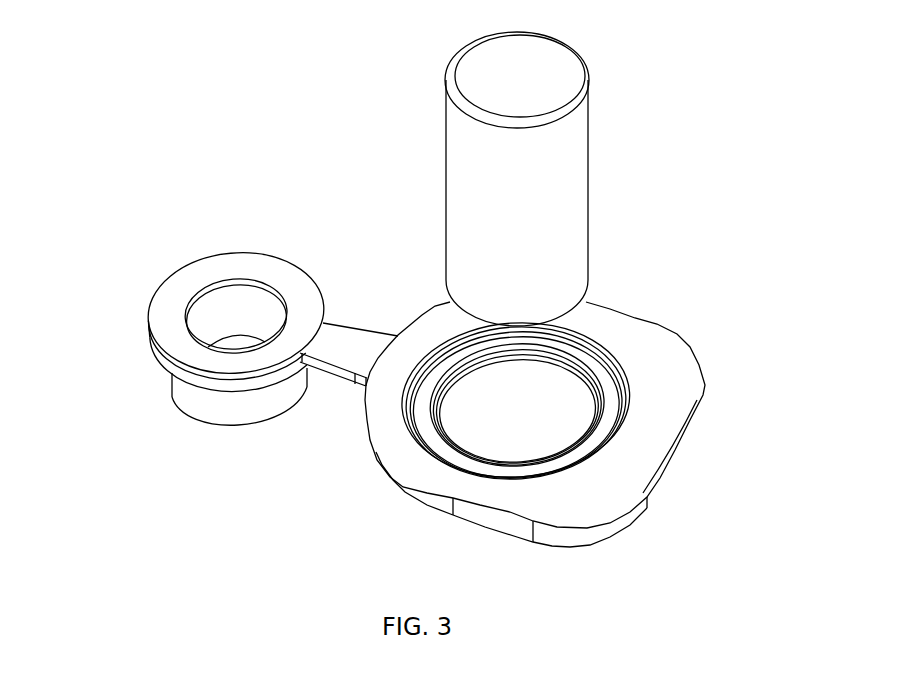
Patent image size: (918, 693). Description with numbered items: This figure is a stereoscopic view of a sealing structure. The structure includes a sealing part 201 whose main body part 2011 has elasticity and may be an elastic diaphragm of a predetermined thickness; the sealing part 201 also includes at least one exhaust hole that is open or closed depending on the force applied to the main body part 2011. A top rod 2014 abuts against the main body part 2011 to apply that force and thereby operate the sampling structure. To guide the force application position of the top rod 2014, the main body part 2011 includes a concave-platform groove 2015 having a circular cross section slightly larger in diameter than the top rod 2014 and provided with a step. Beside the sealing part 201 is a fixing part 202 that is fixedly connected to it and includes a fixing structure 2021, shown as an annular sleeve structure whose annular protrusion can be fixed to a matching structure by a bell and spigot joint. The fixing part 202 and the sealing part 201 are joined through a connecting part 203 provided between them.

The sealing part 201 is at (688, 378).
The main body part 2011 is at (547, 422).
The top rod 2014 is at (572, 165).
The concave-platform groove 2015 is at (443, 392).
The fixing part 202 is at (187, 279).
The fixing structure 2021 is at (215, 407).
The connecting part 203 is at (350, 342).